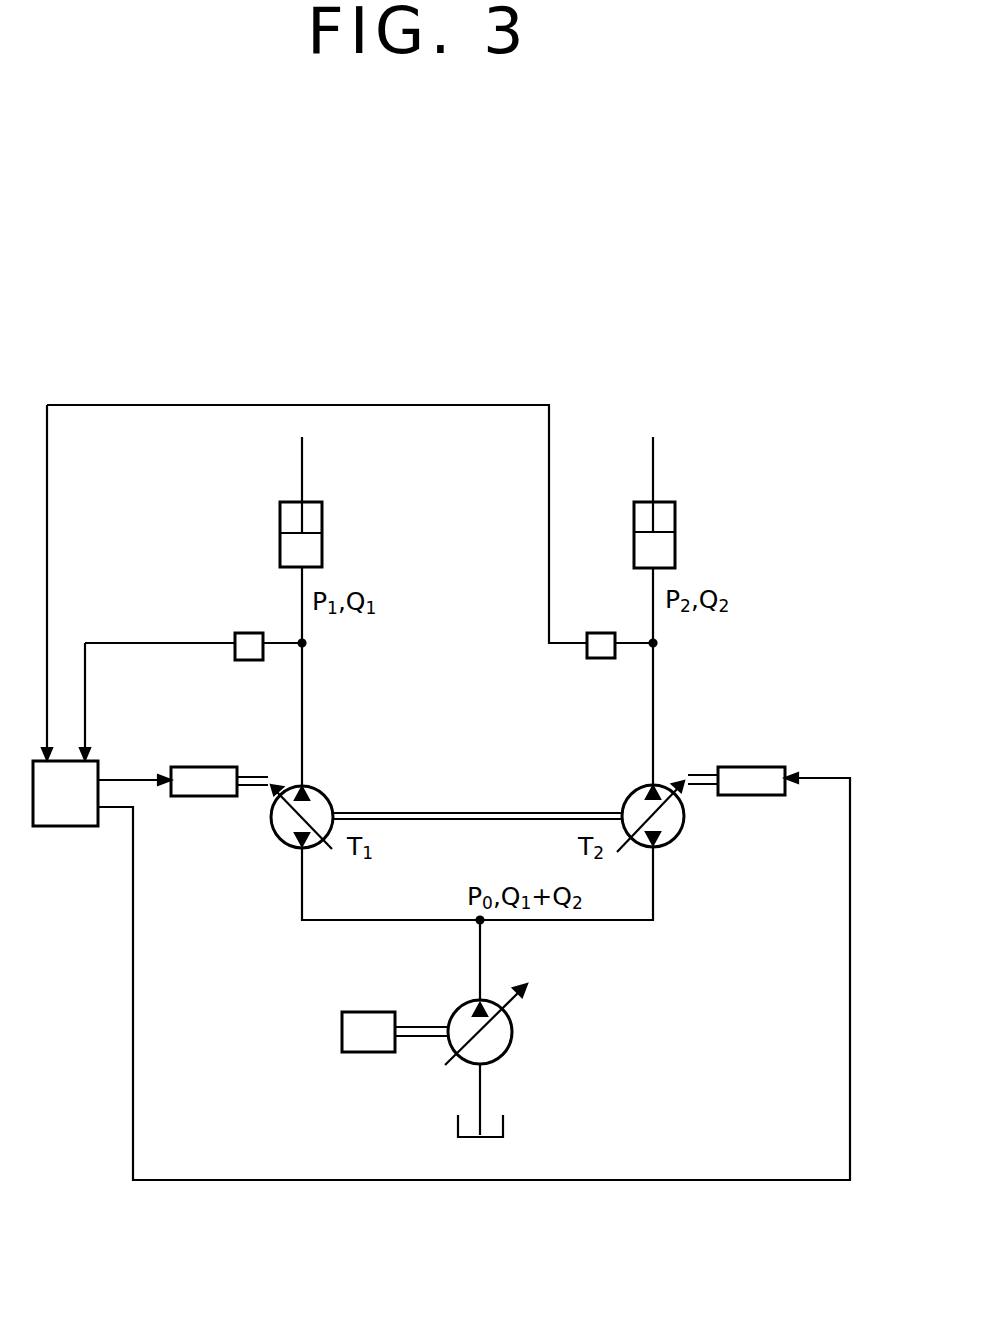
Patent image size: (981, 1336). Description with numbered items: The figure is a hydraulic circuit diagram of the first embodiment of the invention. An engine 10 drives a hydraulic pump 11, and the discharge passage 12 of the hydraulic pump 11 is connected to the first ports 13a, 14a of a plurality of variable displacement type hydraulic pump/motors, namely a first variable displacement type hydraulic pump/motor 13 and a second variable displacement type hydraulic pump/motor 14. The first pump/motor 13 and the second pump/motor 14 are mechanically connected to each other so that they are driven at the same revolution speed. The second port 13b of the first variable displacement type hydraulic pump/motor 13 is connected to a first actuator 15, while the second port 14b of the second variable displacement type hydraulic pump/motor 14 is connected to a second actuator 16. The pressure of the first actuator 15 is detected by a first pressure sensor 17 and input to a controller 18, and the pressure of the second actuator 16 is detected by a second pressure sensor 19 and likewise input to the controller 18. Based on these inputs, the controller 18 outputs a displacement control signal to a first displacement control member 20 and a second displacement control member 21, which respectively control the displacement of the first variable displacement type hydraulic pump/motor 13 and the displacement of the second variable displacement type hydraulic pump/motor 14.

The engine 10 is at (336, 1015).
The hydraulic pump 11 is at (497, 1040).
The discharge passage 12 is at (480, 963).
The first variable displacement type hydraulic pump/motor 13 is at (309, 819).
The first port 13a is at (297, 849).
The second port 13b is at (307, 784).
The second variable displacement type hydraulic pump/motor 14 is at (675, 822).
The first port 14a is at (655, 847).
The second port 14b is at (653, 786).
The first actuator 15 is at (280, 507).
The second actuator 16 is at (675, 505).
The first pressure sensor 17 is at (236, 633).
The controller 18 is at (100, 760).
The second pressure sensor 19 is at (602, 633).
The first displacement control member 20 is at (200, 767).
The second displacement control member 21 is at (760, 767).